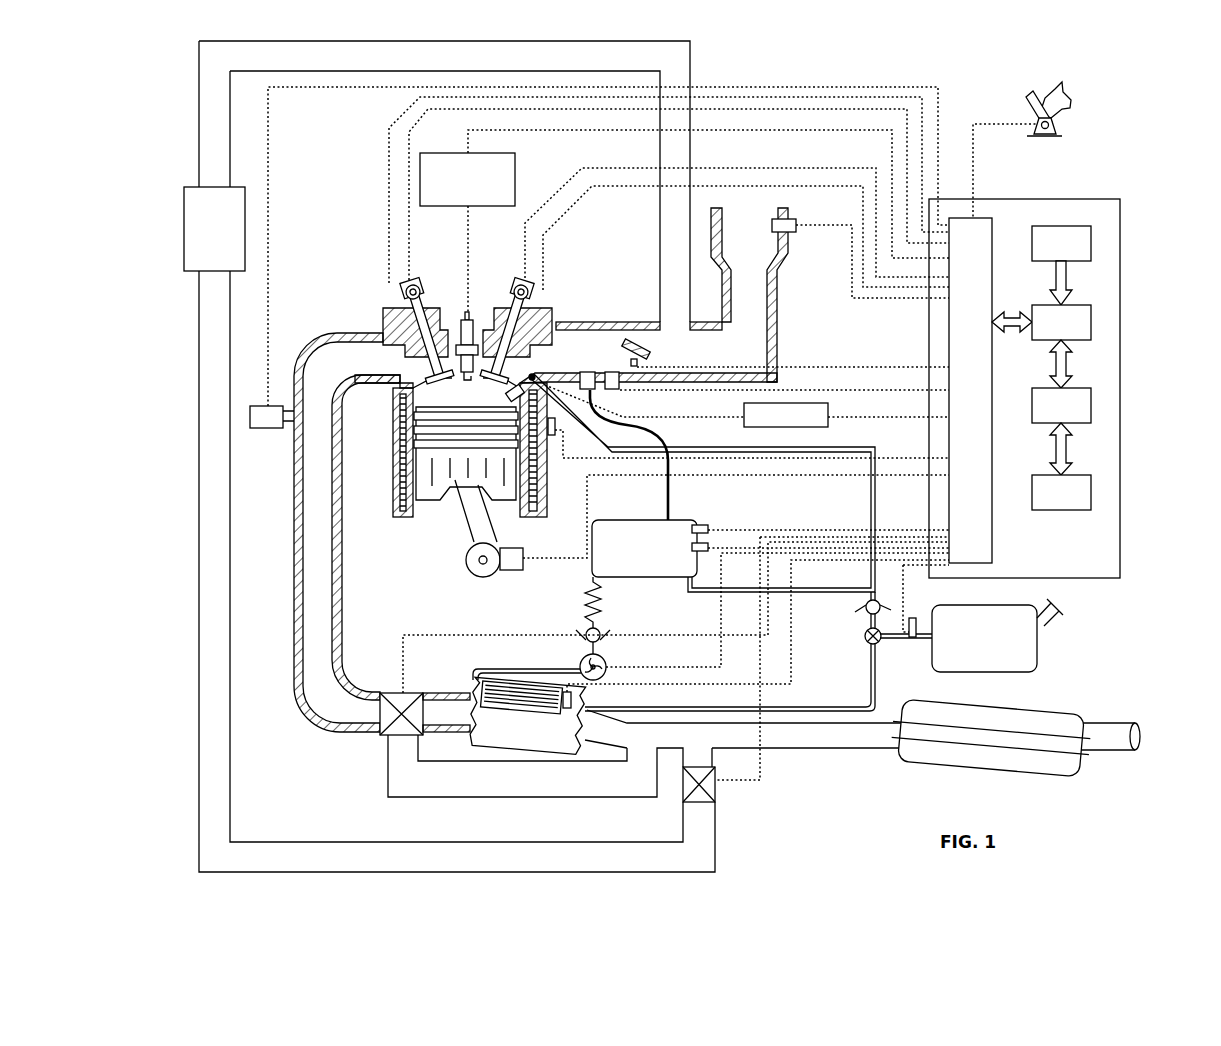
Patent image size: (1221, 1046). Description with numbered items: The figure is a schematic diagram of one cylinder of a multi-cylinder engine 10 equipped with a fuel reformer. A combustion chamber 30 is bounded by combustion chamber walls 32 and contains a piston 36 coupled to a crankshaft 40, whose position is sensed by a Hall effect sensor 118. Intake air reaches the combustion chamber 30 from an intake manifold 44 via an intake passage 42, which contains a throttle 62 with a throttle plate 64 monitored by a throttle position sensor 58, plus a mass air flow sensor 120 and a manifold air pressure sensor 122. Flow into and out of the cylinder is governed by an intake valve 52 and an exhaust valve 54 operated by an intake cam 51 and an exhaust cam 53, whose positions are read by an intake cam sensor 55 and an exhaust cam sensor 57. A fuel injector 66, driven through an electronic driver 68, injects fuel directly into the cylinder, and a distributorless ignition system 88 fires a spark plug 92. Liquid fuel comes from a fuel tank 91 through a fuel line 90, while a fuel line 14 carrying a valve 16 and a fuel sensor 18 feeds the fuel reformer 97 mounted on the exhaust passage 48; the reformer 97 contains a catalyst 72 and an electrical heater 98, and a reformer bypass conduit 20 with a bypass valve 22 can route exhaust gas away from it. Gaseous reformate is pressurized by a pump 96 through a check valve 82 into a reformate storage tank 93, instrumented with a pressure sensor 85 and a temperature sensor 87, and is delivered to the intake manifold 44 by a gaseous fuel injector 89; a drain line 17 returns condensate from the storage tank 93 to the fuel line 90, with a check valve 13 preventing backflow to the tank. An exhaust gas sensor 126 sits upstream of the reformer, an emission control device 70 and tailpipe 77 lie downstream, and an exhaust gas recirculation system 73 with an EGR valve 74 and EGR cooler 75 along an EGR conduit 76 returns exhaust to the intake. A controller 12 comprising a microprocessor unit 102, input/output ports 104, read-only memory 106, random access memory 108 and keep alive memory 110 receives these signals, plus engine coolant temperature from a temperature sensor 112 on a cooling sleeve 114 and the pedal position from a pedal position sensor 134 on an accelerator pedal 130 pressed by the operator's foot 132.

The engine 10 is at (305, 290).
The controller 12 is at (1120, 199).
The check valve 13 is at (864, 608).
The fuel line 14 is at (772, 707).
The valve 16 is at (866, 641).
The drain line 17 is at (740, 593).
The fuel sensor 18 is at (913, 618).
The reformer bypass conduit 20 is at (403, 782).
The bypass valve 22 is at (396, 693).
The combustion chamber 30 is at (462, 390).
The combustion chamber walls 32 is at (413, 522).
The piston 36 is at (452, 486).
The crankshaft 40 is at (469, 570).
The intake passage 42 is at (758, 247).
The intake manifold 44 is at (616, 361).
The exhaust passage 48 is at (366, 366).
The intake cam 51 is at (514, 283).
The intake valve 52 is at (505, 354).
The exhaust cam 53 is at (420, 283).
The exhaust valve 54 is at (393, 335).
The intake cam sensor 55 is at (532, 300).
The exhaust cam sensor 57 is at (405, 296).
The throttle position sensor 58 is at (640, 362).
The throttle 62 is at (638, 340).
The throttle plate 64 is at (630, 340).
The fuel injector 66 is at (560, 436).
The electronic driver 68 is at (786, 415).
The emission control device 70 is at (920, 706).
The catalyst 72 is at (512, 683).
The exhaust gas recirculation system 73 is at (178, 657).
The EGR valve 74 is at (716, 790).
The EGR cooler 75 is at (214, 229).
The EGR conduit 76 is at (199, 447).
The tailpipe 77 is at (1120, 753).
The check valve 82 is at (600, 630).
The pressure sensor 85 is at (705, 525).
The temperature sensor 87 is at (710, 552).
The distributorless ignition system 88 is at (684, 221).
The gaseous fuel injector 89 is at (586, 372).
The fuel line 90 is at (876, 488).
The fuel tank 91 is at (997, 635).
The spark plug 92 is at (470, 312).
The reformate storage tank 93 is at (641, 509).
The pump 96 is at (606, 660).
The fuel reformer 97 is at (474, 745).
The electrical heater 98 is at (575, 691).
The microprocessor unit 102 is at (1091, 325).
The input/output ports 104 is at (994, 225).
The read-only memory 106 is at (1091, 243).
The random access memory 108 is at (1091, 408).
The keep alive memory 110 is at (1091, 494).
The temperature sensor 112 is at (545, 458).
The cooling sleeve 114 is at (541, 494).
The Hall effect sensor 118 is at (512, 571).
The mass air flow sensor 120 is at (796, 221).
The manifold air pressure sensor 122 is at (612, 390).
The exhaust gas sensor 126 is at (599, 257).
The accelerator pedal 130 is at (1028, 103).
The foot 132 is at (1070, 95).
The pedal position sensor 134 is at (1060, 129).